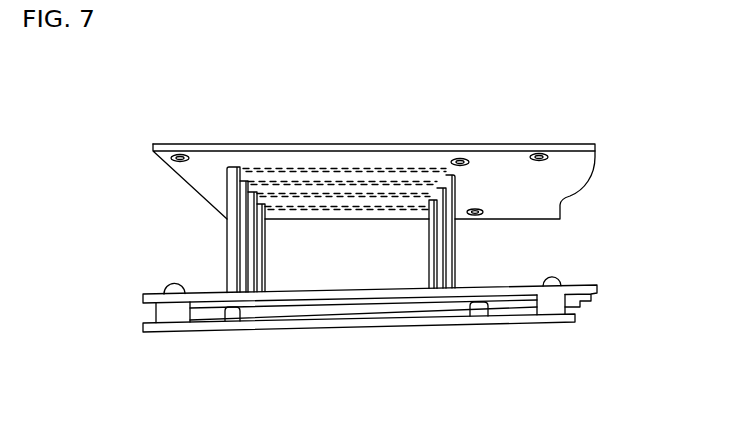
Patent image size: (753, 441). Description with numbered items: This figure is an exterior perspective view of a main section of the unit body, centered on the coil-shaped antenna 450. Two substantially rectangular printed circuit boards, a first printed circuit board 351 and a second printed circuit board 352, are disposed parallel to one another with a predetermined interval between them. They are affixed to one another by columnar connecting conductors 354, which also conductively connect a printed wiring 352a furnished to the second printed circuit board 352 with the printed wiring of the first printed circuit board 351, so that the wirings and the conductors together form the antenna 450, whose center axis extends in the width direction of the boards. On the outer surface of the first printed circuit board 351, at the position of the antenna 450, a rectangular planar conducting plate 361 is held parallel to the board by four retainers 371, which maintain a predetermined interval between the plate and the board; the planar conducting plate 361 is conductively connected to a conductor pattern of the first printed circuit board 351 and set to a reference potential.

The antenna 450 is at (191, 238).
The first printed circuit board 351 is at (513, 292).
The second printed circuit board 352 is at (489, 151).
The printed wiring 352a is at (340, 168).
The columnar connecting conductors 354 is at (235, 207).
The planar conducting plate 361 is at (360, 328).
The retainers 371 is at (173, 310).